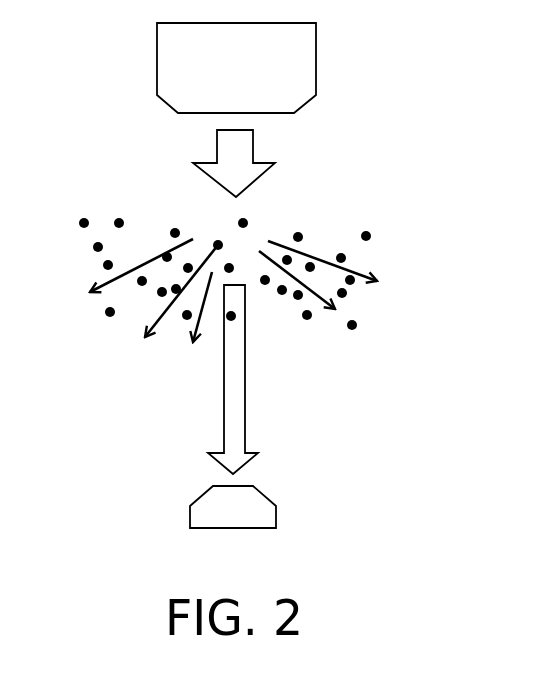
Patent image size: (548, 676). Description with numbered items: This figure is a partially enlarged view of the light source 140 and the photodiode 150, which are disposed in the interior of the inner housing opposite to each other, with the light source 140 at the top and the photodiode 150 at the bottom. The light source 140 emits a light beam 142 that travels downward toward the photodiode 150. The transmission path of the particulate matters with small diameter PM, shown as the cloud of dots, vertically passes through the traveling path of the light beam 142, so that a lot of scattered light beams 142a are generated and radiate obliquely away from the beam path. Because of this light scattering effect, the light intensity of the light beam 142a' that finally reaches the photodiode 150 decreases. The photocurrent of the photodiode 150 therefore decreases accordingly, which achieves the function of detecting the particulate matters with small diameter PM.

The light source 140 is at (306, 71).
The light beam 142 is at (248, 143).
The scattered light beams 142a is at (260, 320).
The light beam finally reaching the photodiode 142a' is at (268, 379).
The particulate matters with small diameter PM is at (350, 265).
The photodiode 150 is at (269, 518).